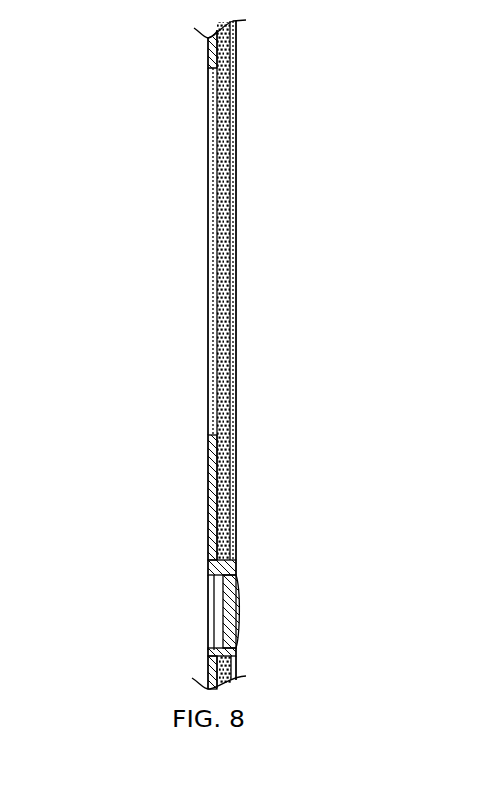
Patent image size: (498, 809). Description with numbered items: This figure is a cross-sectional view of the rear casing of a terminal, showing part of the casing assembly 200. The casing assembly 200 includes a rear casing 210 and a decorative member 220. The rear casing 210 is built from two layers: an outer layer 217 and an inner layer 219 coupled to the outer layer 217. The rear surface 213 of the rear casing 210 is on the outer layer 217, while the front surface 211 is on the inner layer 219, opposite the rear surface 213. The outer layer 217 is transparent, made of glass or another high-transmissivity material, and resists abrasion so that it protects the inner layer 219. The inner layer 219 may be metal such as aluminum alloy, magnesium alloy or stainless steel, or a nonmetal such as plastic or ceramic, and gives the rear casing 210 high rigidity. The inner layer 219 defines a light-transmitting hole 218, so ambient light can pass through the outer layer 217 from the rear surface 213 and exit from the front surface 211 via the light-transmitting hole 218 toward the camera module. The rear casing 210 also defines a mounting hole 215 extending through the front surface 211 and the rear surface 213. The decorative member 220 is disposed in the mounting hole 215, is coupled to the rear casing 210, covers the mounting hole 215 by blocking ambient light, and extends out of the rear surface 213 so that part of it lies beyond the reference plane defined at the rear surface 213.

The casing assembly 200 is at (180, 60).
The light-transmitting hole 218 is at (210, 266).
The outer layer 217 is at (229, 289).
The rear surface 213 is at (236, 389).
The rear casing 210 is at (229, 452).
The front surface 211 is at (208, 474).
The inner layer 219 is at (208, 532).
The mounting hole 215 is at (235, 552).
The decorative member 220 is at (240, 603).